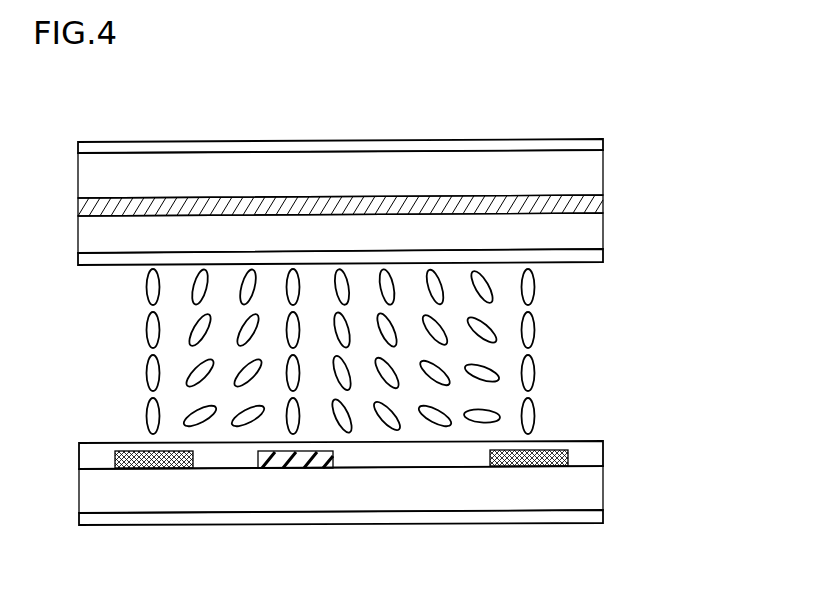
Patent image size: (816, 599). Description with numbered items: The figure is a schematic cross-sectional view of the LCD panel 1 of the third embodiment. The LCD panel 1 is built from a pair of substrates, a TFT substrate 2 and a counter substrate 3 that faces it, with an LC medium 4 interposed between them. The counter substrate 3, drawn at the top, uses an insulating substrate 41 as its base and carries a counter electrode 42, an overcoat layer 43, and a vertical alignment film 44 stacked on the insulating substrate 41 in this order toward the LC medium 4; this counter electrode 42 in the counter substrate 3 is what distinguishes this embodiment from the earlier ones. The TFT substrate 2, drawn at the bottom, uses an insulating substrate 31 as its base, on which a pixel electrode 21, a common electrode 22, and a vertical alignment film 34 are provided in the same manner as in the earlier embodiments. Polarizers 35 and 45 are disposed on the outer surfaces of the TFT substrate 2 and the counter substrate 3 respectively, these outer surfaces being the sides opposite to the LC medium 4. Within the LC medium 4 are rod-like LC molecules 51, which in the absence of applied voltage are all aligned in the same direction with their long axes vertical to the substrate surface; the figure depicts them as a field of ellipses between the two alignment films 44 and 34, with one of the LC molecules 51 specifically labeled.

The LCD panel 1 is at (679, 110).
The TFT substrate 2 is at (65, 443).
The counter substrate 3 is at (65, 142).
The LC medium 4 is at (65, 268).
The pixel electrode 21 is at (147, 469).
The common electrode 22 is at (303, 469).
The insulating substrate 31 is at (598, 487).
The vertical alignment film 34 is at (598, 450).
The polarizer 35 is at (598, 516).
The insulating substrate 41 is at (597, 178).
The counter electrode 42 is at (597, 203).
The overcoat layer 43 is at (603, 229).
The vertical alignment film 44 is at (598, 254).
The polarizer 45 is at (598, 148).
The LC molecules 51 is at (530, 325).